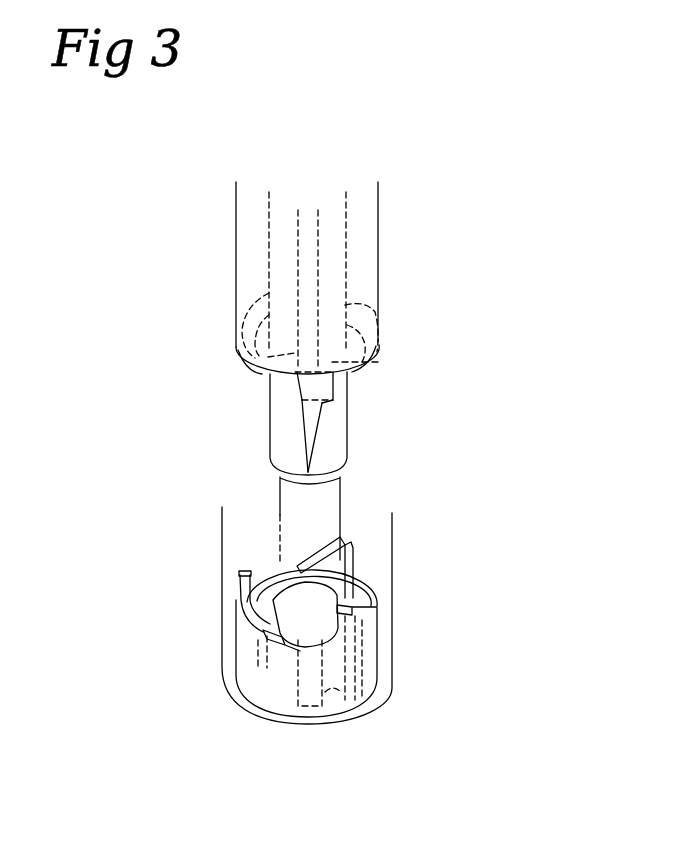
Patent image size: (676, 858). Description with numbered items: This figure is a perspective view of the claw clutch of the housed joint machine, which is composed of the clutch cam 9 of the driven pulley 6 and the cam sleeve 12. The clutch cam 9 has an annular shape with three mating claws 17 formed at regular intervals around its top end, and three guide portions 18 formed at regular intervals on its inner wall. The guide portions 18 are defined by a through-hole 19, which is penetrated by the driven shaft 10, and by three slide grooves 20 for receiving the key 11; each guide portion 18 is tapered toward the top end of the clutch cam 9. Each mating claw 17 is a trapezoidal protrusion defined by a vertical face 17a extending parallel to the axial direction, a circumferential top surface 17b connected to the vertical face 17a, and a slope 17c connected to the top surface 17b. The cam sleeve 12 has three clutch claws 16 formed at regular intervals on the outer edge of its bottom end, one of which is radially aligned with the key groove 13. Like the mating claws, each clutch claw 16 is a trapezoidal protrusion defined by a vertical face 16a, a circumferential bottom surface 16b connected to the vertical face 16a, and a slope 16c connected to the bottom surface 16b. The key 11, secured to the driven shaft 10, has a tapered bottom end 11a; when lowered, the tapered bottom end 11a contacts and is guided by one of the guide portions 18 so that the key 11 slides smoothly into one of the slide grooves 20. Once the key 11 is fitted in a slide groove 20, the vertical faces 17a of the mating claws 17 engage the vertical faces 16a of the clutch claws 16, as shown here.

The driven pulley 6 is at (392, 565).
The clutch cam 9 is at (393, 667).
The driven shaft 10 is at (347, 412).
The key 11 is at (315, 428).
The tapered bottom end 11a is at (345, 474).
The cam sleeve 12 is at (373, 215).
The key groove 13 is at (340, 366).
The clutch claw 16 is at (364, 307).
The vertical face 16a is at (247, 362).
The circumferential bottom surface 16b is at (300, 426).
The slope 16c is at (368, 345).
The mating claw 17 is at (237, 592).
The vertical face 17a is at (287, 695).
The circumferential top surface 17b is at (242, 574).
The slope 17c is at (313, 567).
The guide portion 18 is at (309, 601).
The through-hole 19 is at (333, 723).
The slide groove 20 is at (243, 706).